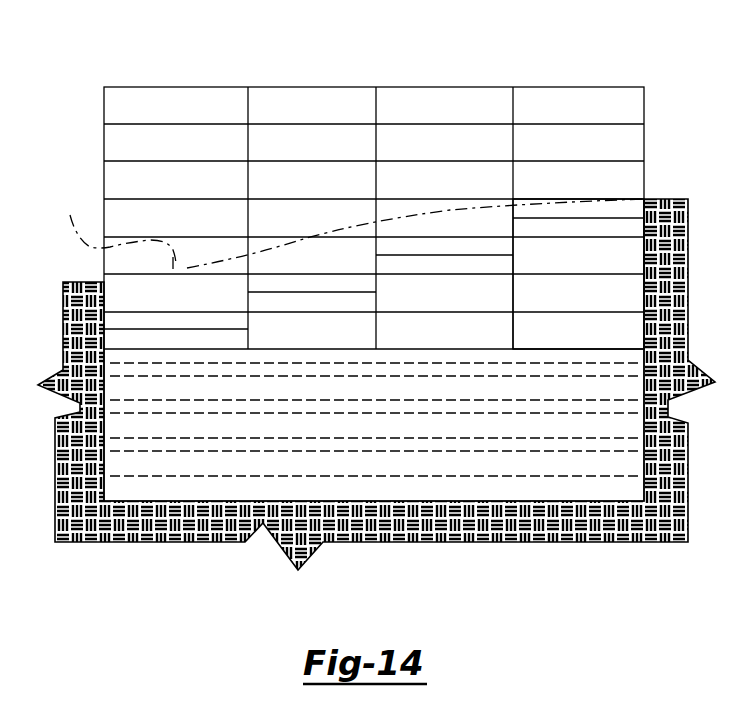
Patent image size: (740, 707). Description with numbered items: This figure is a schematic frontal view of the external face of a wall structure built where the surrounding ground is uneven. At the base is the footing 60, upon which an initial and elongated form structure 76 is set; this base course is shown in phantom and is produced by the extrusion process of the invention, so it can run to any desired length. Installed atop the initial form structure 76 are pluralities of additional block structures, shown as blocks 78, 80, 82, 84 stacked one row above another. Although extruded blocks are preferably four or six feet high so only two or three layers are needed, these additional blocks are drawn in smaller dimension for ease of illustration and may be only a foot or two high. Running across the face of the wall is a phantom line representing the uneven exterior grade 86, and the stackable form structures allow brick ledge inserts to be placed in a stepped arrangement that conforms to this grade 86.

The footing 60 is at (152, 527).
The initial elongated form structure 76 is at (470, 415).
The blocks 78 is at (113, 145).
The blocks 80 is at (280, 145).
The blocks 82 is at (453, 147).
The blocks 84 is at (562, 147).
The uneven exterior grade 86 is at (348, 225).